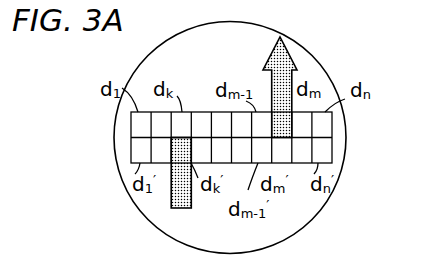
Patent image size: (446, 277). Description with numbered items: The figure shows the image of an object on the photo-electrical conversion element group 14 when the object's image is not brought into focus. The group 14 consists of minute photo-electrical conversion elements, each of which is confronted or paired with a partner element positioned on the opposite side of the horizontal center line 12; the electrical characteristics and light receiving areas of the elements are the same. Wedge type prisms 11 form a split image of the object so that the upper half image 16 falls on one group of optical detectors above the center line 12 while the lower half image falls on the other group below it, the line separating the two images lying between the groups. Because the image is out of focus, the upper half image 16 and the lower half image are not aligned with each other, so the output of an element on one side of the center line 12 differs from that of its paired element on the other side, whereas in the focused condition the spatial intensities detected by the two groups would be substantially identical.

The wedge type prism 11 is at (305, 53).
The horizontal center line 12 is at (345, 151).
The photo-electrical conversion element group 14 is at (131, 137).
The upper half image of the object 16 is at (265, 62).